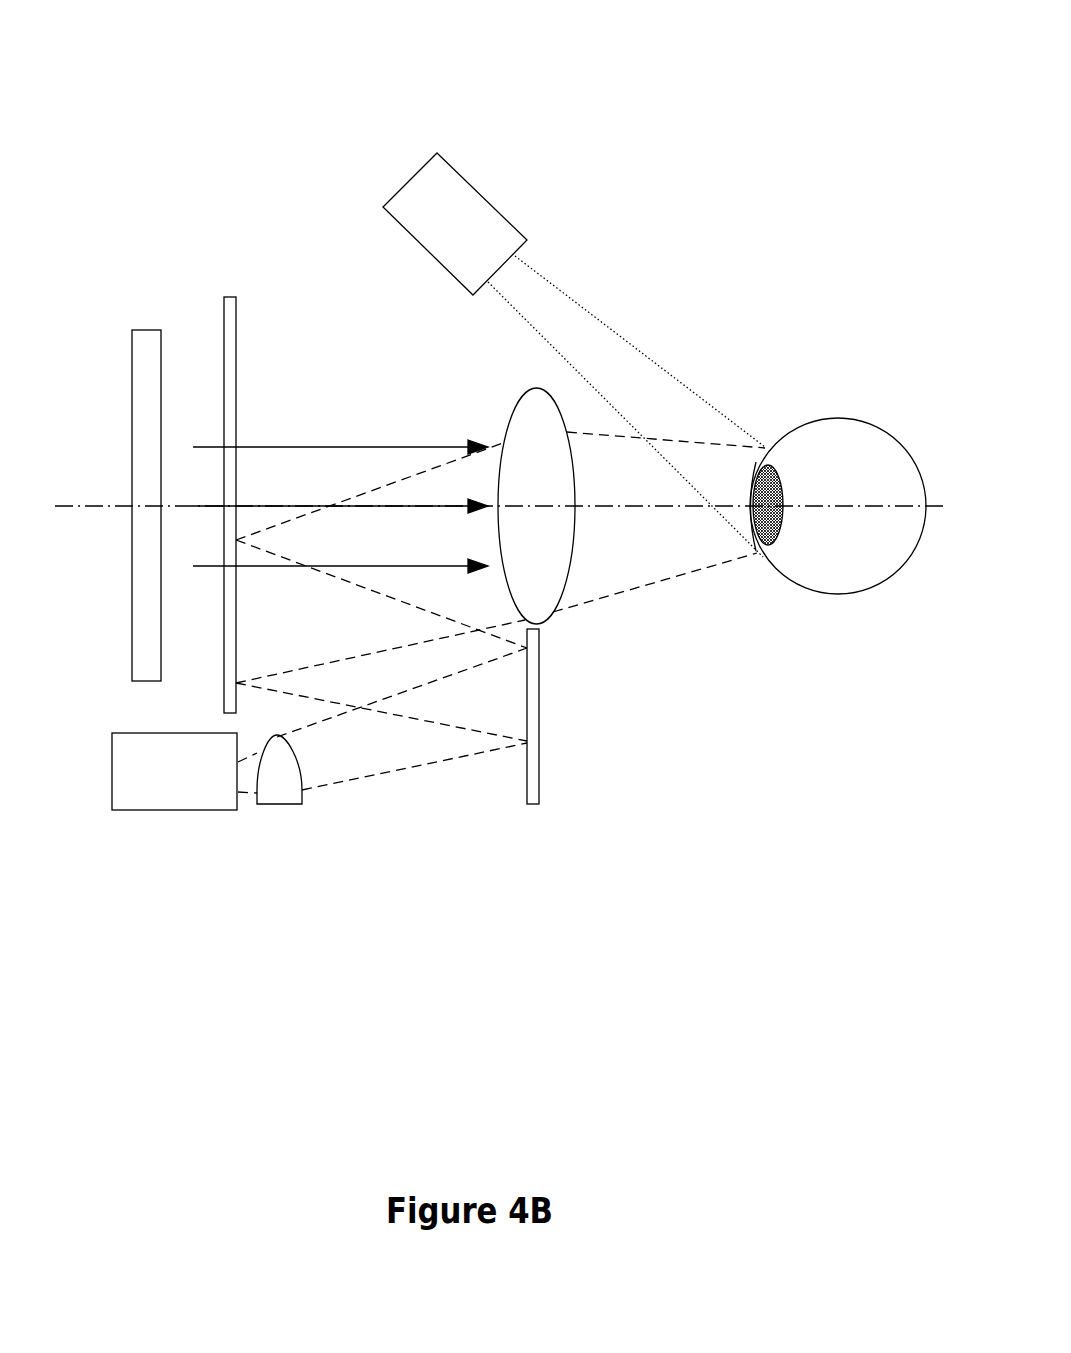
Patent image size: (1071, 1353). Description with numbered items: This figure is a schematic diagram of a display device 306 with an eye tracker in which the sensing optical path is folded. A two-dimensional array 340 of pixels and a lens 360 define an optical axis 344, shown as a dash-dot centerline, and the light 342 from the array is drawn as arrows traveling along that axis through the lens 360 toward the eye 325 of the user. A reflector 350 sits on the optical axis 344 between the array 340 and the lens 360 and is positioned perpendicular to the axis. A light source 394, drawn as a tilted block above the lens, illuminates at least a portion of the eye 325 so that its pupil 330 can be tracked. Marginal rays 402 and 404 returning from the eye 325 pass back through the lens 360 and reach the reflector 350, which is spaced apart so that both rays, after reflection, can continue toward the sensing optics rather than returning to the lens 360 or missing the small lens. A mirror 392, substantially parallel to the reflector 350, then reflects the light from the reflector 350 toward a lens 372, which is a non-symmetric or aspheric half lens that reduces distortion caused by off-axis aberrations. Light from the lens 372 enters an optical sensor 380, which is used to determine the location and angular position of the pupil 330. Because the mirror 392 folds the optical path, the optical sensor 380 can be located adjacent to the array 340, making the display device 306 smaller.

The display device 306 is at (186, 96).
The eye 325 is at (838, 417).
The pupil 330 is at (753, 487).
The two-dimensional array of pixels 340 is at (132, 377).
The image light 342 is at (372, 447).
The optical axis 344 is at (90, 508).
The reflector 350 is at (236, 296).
The lens 360 is at (548, 622).
The lens 372 is at (280, 805).
The optical sensor 380 is at (177, 811).
The mirror 392 is at (530, 805).
The light source 394 is at (475, 182).
The marginal ray 402 is at (597, 430).
The marginal ray 404 is at (663, 580).